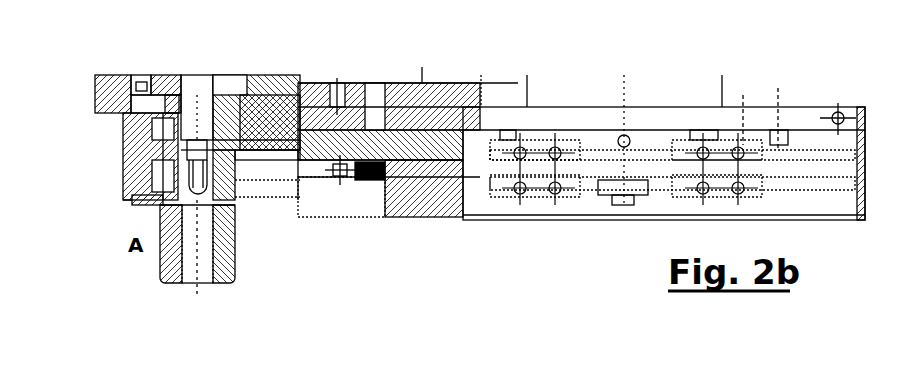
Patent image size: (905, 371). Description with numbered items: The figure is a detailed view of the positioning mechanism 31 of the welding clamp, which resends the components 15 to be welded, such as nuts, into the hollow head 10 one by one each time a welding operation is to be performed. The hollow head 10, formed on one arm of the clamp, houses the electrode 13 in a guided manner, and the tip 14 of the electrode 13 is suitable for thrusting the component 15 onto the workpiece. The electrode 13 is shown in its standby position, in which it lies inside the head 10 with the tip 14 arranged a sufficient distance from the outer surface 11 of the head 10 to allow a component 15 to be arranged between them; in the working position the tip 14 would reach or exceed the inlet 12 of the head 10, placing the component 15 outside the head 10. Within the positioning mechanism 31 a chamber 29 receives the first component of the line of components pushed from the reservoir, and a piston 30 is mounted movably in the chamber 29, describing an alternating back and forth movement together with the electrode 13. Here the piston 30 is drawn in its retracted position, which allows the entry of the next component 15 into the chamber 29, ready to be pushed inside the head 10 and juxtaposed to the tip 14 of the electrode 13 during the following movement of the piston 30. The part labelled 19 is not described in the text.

The hollow head 10 is at (132, 171).
The outer surface of the head 11 is at (223, 281).
The inlet of the head 12 is at (190, 273).
The electrode 13 is at (197, 97).
The tip of the electrode 14 is at (193, 155).
The component to be welded 15 is at (372, 188).
The piston block 19 is at (223, 180).
The chamber 29 is at (326, 195).
The piston 30 is at (467, 175).
The positioning mechanism 31 is at (420, 83).